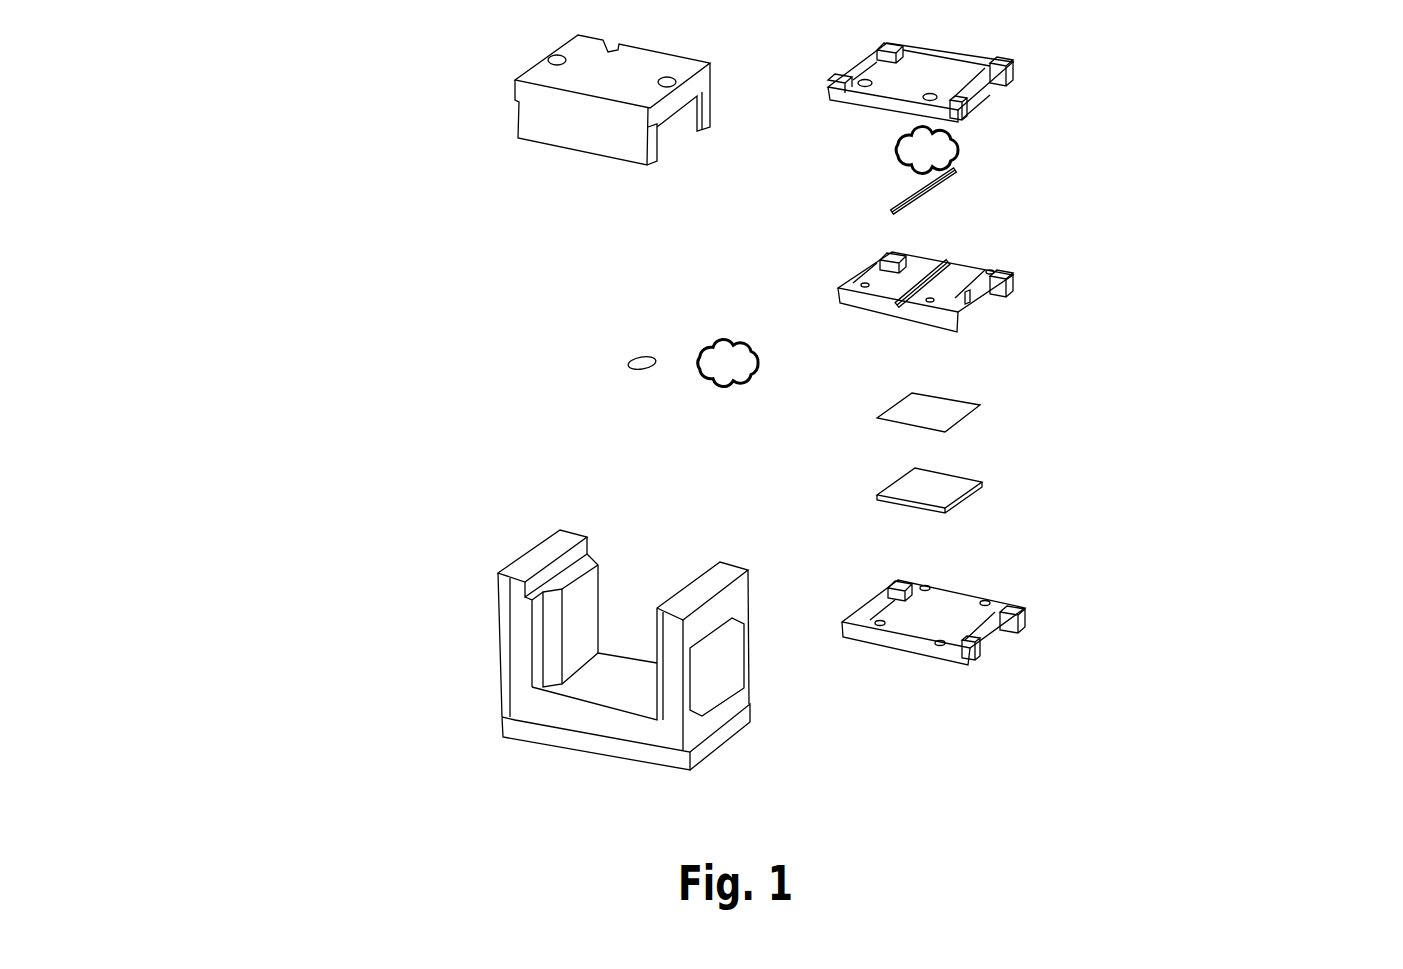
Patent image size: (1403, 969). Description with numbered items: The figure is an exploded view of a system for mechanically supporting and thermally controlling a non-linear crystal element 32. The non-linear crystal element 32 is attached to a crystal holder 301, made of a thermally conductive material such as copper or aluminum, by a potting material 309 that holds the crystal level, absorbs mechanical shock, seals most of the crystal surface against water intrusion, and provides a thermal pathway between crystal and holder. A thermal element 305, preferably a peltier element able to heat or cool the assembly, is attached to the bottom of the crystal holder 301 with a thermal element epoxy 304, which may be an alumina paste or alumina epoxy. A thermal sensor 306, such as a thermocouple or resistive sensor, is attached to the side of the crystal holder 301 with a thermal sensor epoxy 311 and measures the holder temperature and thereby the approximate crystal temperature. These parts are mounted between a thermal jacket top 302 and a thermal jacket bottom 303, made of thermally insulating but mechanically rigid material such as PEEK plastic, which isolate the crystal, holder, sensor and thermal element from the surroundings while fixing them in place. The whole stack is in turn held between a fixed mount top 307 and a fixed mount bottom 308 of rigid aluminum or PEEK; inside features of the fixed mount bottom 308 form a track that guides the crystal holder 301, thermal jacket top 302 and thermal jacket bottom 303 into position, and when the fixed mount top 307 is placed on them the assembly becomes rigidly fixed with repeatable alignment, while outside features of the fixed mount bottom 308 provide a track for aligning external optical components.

The fixed mount top 307 is at (487, 95).
The thermal sensor epoxy 311 is at (708, 345).
The thermal sensor 306 is at (597, 356).
The fixed mount bottom 308 is at (477, 644).
The thermal jacket top 302 is at (1023, 91).
The potting material 309 is at (972, 147).
The non-linear crystal element 32 is at (945, 207).
The crystal holder 301 is at (1033, 303).
The thermal element epoxy 304 is at (1005, 403).
The thermal element 305 is at (1005, 491).
The thermal jacket bottom 303 is at (1035, 642).